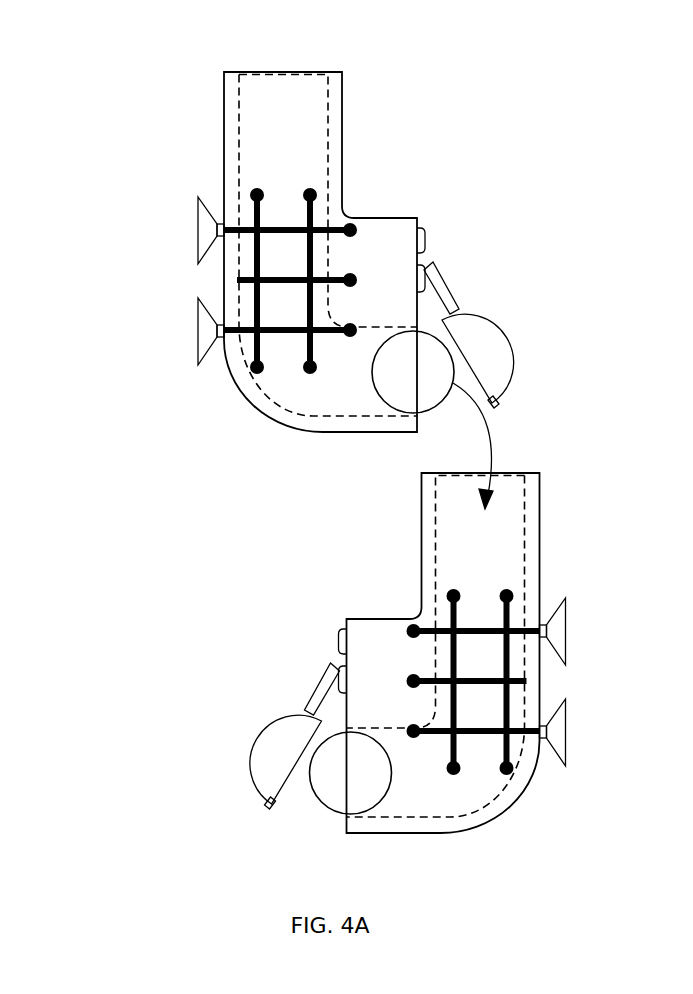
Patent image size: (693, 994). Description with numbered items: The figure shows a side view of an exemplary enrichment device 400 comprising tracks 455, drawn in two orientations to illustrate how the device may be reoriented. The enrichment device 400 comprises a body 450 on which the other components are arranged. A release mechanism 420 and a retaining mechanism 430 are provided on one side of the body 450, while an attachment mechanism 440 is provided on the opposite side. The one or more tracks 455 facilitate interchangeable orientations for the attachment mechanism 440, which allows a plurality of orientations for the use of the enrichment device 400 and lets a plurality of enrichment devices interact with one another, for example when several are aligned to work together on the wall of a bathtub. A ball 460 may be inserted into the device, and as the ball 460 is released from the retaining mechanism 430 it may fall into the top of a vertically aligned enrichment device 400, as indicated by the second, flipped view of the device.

The enrichment device 400 is at (102, 36).
The release mechanism 420 is at (431, 240).
The retaining mechanism 430 is at (516, 353).
The attachment mechanism 440 is at (192, 332).
The body 450 is at (350, 127).
The tracks 455 is at (310, 385).
The ball 460 is at (427, 793).